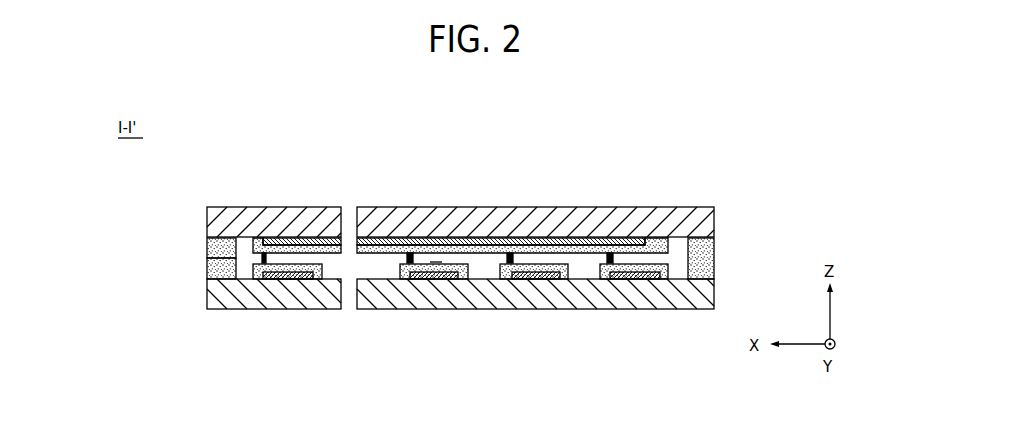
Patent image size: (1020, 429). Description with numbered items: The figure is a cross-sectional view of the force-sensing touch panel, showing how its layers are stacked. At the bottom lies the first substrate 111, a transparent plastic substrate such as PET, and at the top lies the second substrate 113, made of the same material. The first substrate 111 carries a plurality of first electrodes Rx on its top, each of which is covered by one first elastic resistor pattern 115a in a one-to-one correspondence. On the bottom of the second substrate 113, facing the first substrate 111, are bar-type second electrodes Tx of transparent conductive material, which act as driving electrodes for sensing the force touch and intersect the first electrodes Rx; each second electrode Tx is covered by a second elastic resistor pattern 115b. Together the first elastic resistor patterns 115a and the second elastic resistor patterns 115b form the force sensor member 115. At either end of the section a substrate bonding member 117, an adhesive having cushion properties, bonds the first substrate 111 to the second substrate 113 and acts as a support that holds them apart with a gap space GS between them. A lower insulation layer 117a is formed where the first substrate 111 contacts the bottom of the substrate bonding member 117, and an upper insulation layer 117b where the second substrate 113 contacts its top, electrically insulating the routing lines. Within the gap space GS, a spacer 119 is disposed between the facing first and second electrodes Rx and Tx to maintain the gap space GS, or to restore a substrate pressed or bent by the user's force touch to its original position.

The first substrate 111 is at (710, 298).
The second substrate 113 is at (708, 225).
The force sensor member 115 is at (460, 192).
The first elastic resistor patterns 115a is at (460, 214).
The second elastic resistor patterns 115b is at (322, 244).
The substrate bonding member 117 is at (714, 256).
The lower insulation layer 117a is at (207, 277).
The upper insulation layer 117b is at (207, 240).
The spacer 119 is at (611, 255).
The gap space GS is at (436, 262).
The second electrodes Tx is at (526, 248).
The first electrodes Rx is at (535, 280).